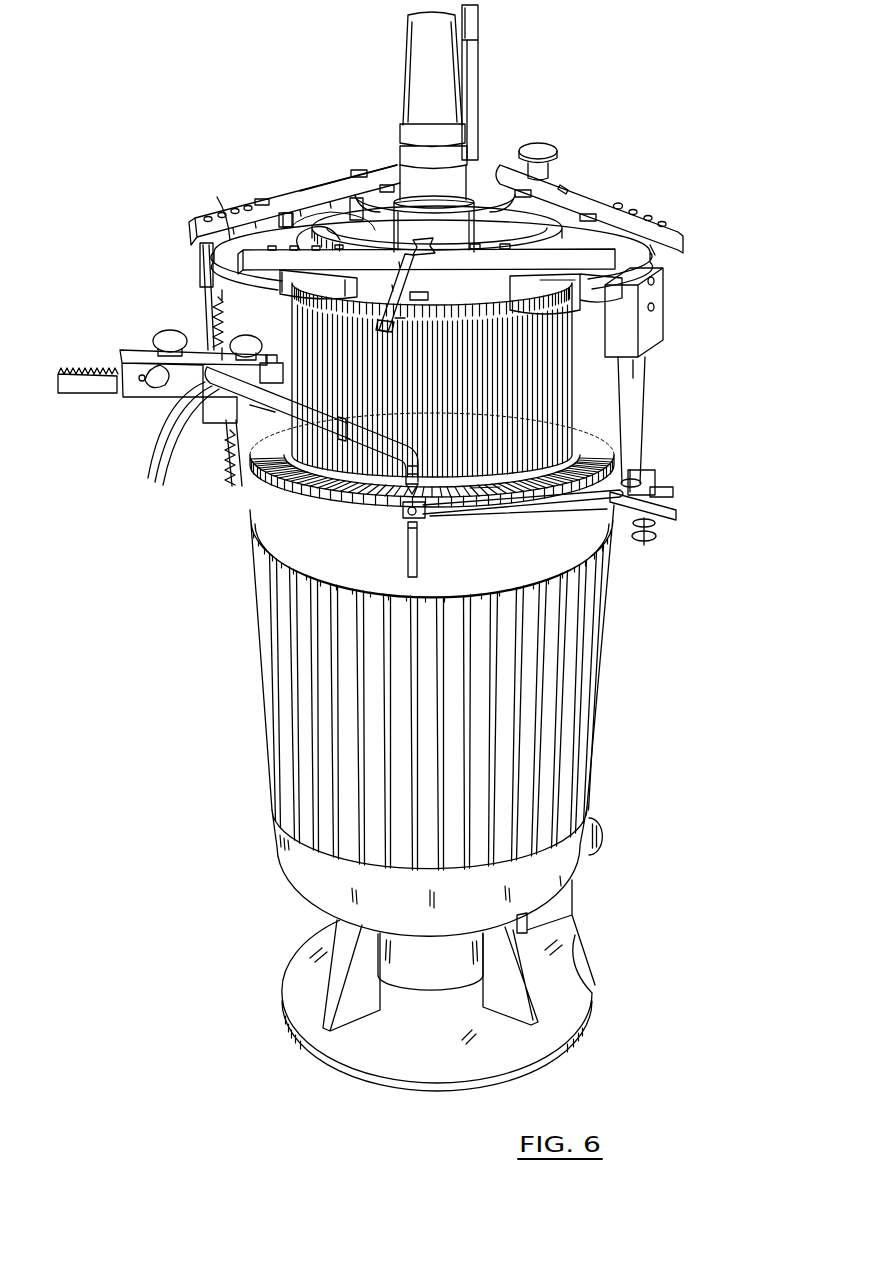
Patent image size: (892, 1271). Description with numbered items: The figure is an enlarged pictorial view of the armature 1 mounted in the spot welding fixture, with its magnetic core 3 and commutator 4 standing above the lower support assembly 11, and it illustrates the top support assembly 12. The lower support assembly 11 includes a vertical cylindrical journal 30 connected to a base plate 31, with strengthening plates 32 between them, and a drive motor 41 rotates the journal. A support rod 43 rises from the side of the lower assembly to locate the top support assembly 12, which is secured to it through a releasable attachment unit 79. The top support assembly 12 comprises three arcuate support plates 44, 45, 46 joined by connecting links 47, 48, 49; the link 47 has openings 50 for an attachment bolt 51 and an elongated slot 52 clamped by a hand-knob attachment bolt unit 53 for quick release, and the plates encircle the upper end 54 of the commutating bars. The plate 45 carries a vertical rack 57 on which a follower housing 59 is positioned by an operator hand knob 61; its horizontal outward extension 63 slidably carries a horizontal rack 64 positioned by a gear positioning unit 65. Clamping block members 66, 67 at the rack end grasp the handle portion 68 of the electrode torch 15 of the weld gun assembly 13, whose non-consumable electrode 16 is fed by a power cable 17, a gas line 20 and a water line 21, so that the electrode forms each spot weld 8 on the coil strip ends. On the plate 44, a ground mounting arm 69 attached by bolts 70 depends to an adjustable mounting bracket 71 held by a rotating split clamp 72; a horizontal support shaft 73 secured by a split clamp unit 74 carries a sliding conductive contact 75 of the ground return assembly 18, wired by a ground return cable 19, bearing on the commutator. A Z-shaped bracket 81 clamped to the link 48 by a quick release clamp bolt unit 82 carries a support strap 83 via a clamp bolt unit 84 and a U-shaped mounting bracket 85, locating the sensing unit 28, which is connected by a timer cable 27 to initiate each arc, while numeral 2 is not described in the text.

The armature 1 is at (266, 727).
The rib 2 is at (573, 763).
The magnetic core 3 is at (568, 695).
The commutator 4 is at (338, 500).
The spot weld 8 is at (488, 480).
The lower support assembly 11 is at (598, 918).
The top support assembly 12 is at (284, 175).
The weld gun assembly 13 is at (378, 420).
The electrode torch 15 is at (422, 464).
The non-consumable electrode 16 is at (404, 486).
The power cable 17 is at (146, 476).
The ground return assembly 18 is at (676, 467).
The ground return cable 19 is at (407, 566).
The gas line 20 is at (156, 486).
The water line 21 is at (163, 478).
The timer cable 27 is at (370, 318).
The sensing unit 28 is at (370, 300).
The vertical cylindrical journal 30 is at (420, 971).
The base plate 31 is at (528, 1042).
The strengthening plates 32 is at (490, 1000).
The drive motor 41 is at (602, 842).
The support rod 43 is at (473, 96).
The arcuate support plate 44 is at (655, 255).
The arcuate support plate 45 is at (213, 235).
The arcuate support plate 46 is at (485, 175).
The adjustment connecting link 47 is at (604, 204).
The adjustment connecting link 48 is at (497, 278).
The adjustment connecting link 49 is at (326, 190).
The openings 50 is at (651, 218).
The attachment bolt 51 is at (624, 206).
The elongated slot 52 is at (565, 190).
The attachment bolt unit 53 is at (548, 150).
The upper end of the commutating bars 54 is at (492, 300).
The vertical rack 57 is at (204, 268).
The follower housing 59 is at (215, 420).
The operator hand knob 61 is at (246, 336).
The horizontal outward extension 63 is at (128, 392).
The horizontal rack 64 is at (68, 373).
The gear positioning unit 65 is at (170, 330).
The clamping and mounting block member 66 is at (265, 412).
The clamping and mounting block member 67 is at (272, 355).
The handle portion 68 is at (318, 408).
The ground mounting arm 69 is at (650, 352).
The bolts 70 is at (655, 306).
The adjustable mounting bracket 71 is at (668, 506).
The rotating split clamp 72 is at (665, 486).
The horizontal support shaft 73 is at (576, 503).
The split clamp unit 74 is at (642, 546).
The sliding conductive contact 75 is at (404, 516).
The releasable attachment unit 79 is at (484, 170).
The Z-shaped bracket 81 is at (425, 305).
The quick release clamp bolt unit 82 is at (428, 240).
The support strap 83 is at (412, 318).
The clamp bolt unit 84 is at (398, 332).
The U-shaped mounting bracket 85 is at (428, 297).